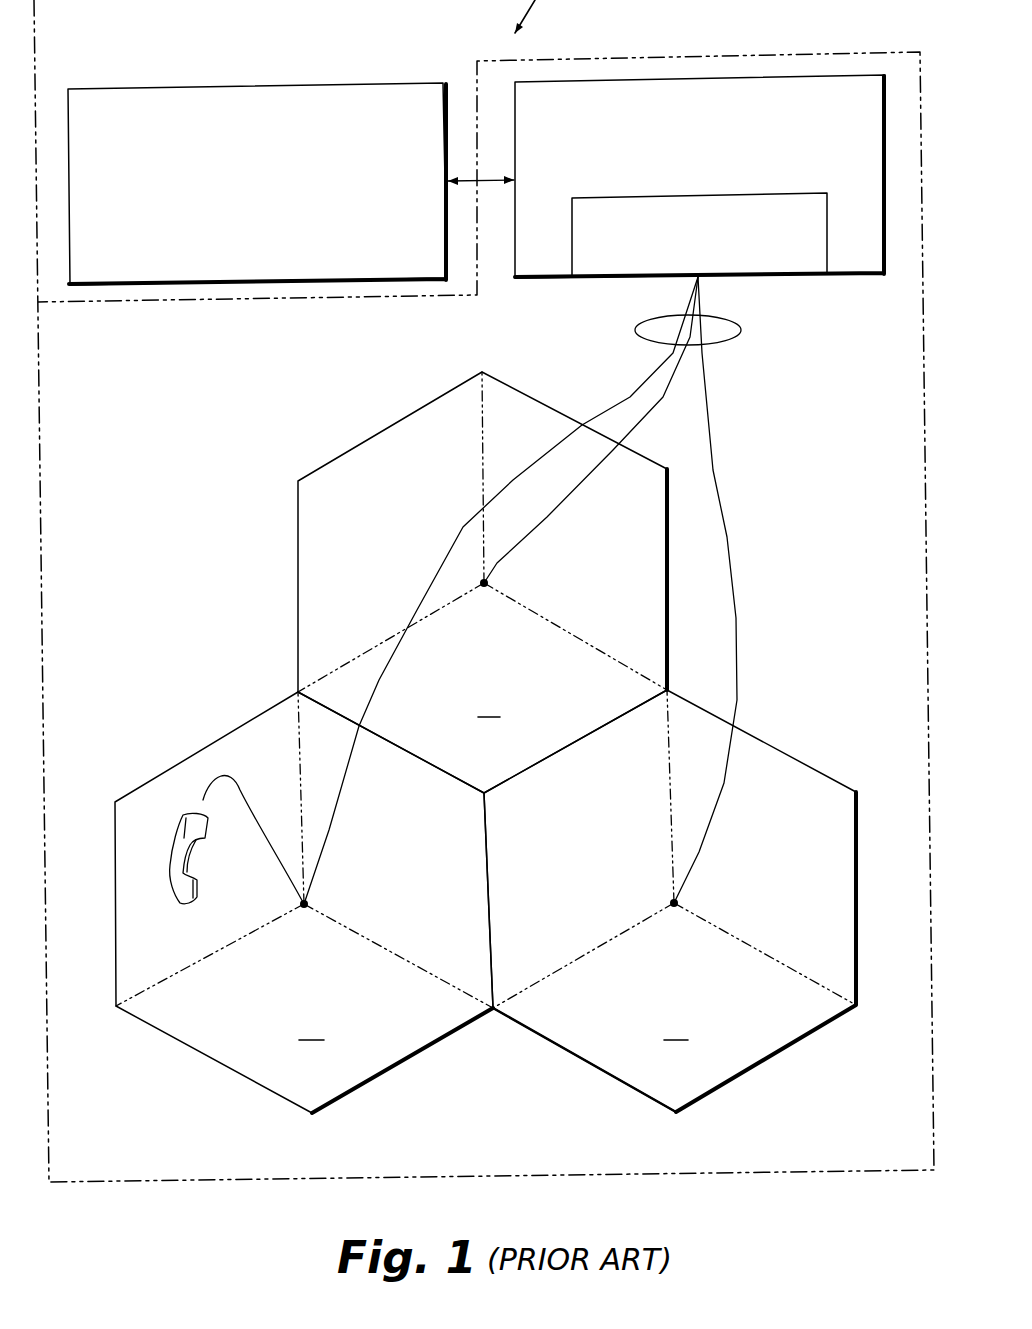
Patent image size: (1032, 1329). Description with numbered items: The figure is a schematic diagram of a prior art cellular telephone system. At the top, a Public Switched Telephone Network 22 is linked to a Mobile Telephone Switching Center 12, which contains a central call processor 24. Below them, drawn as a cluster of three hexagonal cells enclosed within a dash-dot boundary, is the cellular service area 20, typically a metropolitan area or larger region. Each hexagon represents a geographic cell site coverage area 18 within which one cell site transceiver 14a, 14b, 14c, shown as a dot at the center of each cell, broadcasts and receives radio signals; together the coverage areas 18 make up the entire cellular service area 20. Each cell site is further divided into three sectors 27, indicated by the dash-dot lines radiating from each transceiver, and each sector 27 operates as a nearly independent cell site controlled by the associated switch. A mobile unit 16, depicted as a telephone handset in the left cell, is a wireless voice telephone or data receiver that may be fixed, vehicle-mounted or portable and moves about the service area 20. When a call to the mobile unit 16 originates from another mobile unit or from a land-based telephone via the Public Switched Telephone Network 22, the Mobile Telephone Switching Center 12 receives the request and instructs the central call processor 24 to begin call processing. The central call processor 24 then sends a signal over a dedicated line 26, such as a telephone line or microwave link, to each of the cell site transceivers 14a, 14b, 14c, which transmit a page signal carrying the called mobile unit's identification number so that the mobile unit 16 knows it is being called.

The Mobile Telephone Switching Center 12 is at (680, 78).
The cell site transceiver 14a is at (486, 585).
The cell site transceiver 14b is at (499, 634).
The cell site transceiver 14c is at (676, 906).
The mobile unit 16 is at (180, 905).
The cell site coverage area 18 is at (486, 706).
The cellular service area 20 is at (780, 607).
The Public Switched Telephone Network 22 is at (118, 90).
The central call processor 24 is at (828, 250).
The dedicated line 26 is at (740, 333).
The sector 27 is at (330, 465).